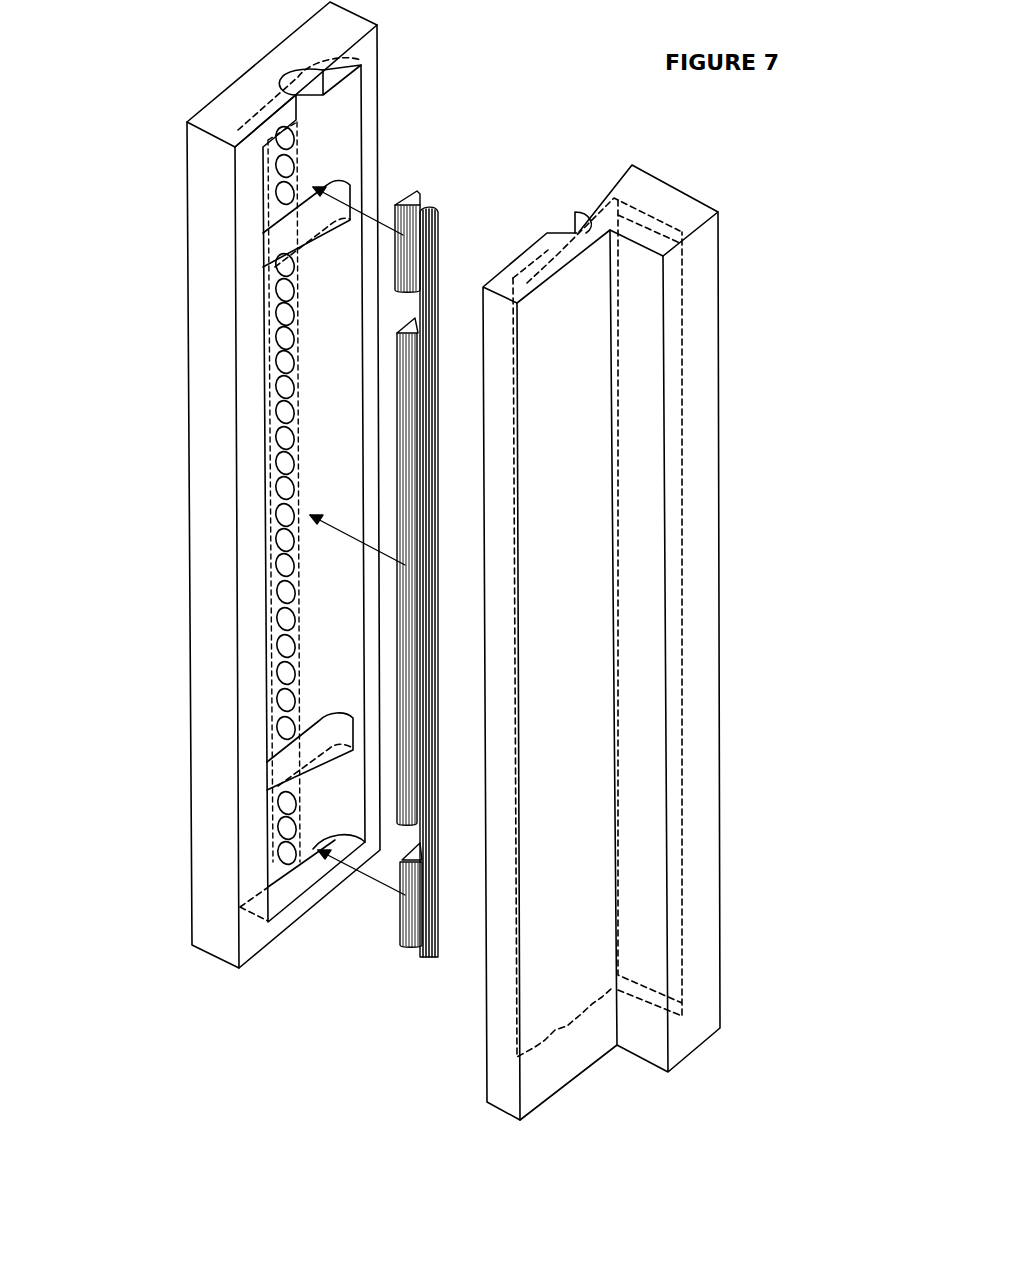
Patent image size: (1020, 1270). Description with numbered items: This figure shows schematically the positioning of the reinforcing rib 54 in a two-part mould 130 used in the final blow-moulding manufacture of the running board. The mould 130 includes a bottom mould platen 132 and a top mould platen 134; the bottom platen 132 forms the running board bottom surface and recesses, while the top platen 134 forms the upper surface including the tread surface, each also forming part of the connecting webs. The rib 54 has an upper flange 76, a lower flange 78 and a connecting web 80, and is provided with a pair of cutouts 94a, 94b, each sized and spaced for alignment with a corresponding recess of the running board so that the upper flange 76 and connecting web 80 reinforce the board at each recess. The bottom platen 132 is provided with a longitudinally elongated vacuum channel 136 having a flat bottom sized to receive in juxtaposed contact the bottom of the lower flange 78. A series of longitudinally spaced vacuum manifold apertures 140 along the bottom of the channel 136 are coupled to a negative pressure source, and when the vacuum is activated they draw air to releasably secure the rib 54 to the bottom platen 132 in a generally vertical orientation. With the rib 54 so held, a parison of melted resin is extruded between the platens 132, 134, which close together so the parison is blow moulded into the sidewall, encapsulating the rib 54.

The two-part mould 130 is at (108, 808).
The bottom mould platen 132 is at (207, 385).
The top mould platen 134 is at (700, 452).
The vacuum channel 136 is at (295, 397).
The vacuum manifold apertures 140 is at (291, 487).
The reinforcing rib 54 is at (440, 232).
The upper flange 76 is at (434, 688).
The lower flange 78 is at (403, 203).
The connecting web 80 is at (421, 927).
The cutout 94a is at (407, 840).
The cutout 94b is at (396, 322).